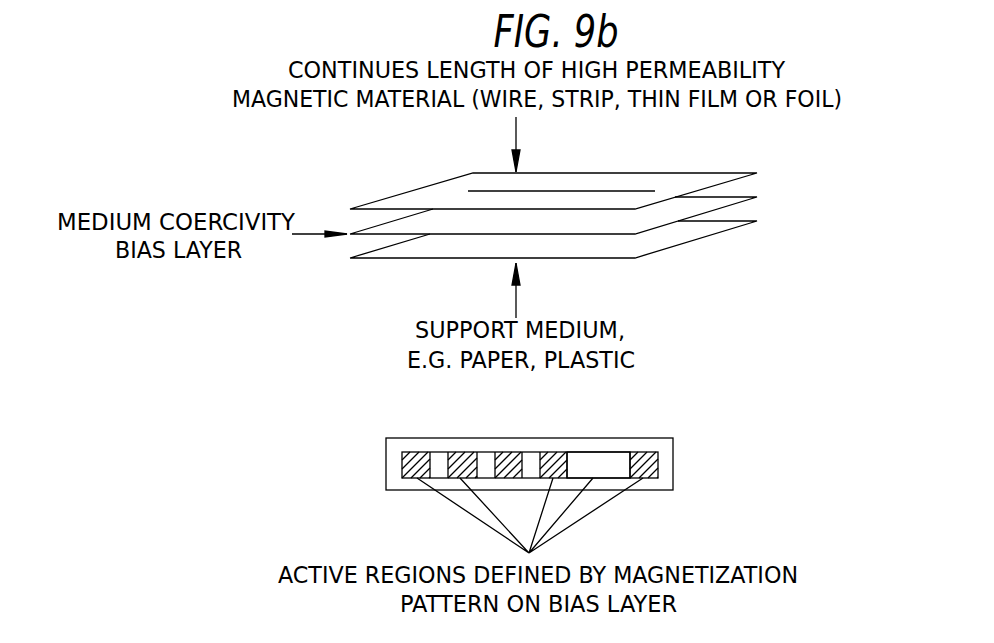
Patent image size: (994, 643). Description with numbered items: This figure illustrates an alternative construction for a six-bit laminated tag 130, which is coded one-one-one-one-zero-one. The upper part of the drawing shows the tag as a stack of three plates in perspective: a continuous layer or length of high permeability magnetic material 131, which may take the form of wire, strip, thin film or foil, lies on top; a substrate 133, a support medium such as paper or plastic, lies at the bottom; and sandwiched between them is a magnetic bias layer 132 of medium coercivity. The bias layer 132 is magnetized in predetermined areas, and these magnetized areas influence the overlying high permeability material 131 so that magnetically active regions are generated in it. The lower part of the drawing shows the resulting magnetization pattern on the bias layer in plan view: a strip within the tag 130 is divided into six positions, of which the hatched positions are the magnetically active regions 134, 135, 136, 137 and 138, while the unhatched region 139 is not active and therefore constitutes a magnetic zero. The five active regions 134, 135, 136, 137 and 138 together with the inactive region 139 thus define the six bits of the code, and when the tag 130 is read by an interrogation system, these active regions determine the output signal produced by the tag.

The laminated tag 130 is at (397, 437).
The high permeability magnetic material 131 is at (432, 198).
The magnetic bias layer 132 is at (688, 212).
The substrate 133 is at (663, 238).
The magnetically active region 134 is at (413, 458).
The magnetically active region 135 is at (460, 458).
The magnetically active region 136 is at (507, 458).
The magnetically active region 137 is at (550, 458).
The magnetically active region 138 is at (643, 458).
The inactive region 139 is at (598, 458).